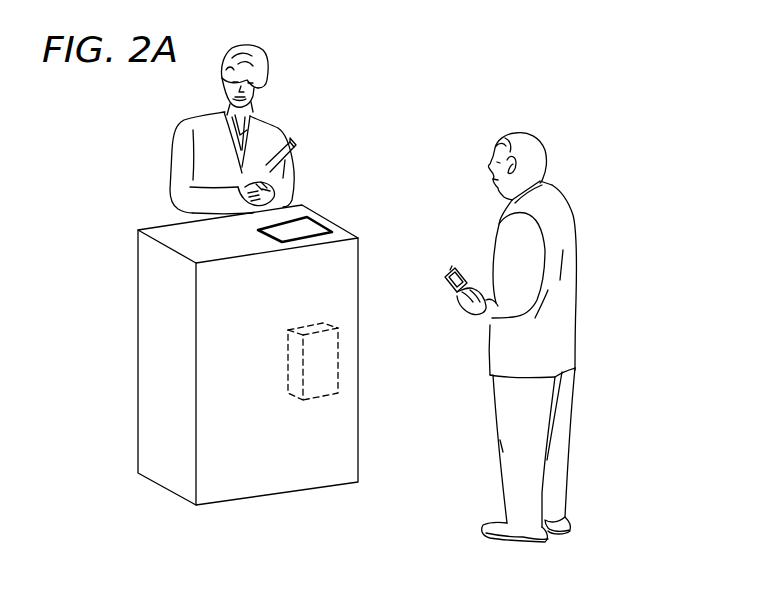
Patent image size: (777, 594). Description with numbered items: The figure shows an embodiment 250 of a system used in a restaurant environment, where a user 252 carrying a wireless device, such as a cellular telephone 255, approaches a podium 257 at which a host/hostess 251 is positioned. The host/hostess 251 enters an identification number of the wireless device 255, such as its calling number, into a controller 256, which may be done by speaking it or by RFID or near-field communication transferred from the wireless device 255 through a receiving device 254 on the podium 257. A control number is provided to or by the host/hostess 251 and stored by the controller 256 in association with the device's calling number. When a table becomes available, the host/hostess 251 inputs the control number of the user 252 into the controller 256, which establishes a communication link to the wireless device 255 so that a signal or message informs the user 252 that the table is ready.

The embodiment of a system 250 is at (497, 62).
The host/hostess 251 is at (169, 153).
The user 252 is at (573, 205).
The receiving device 254 is at (312, 230).
The wireless device 255 is at (452, 289).
The controller 256 is at (288, 370).
The podium 257 is at (165, 483).